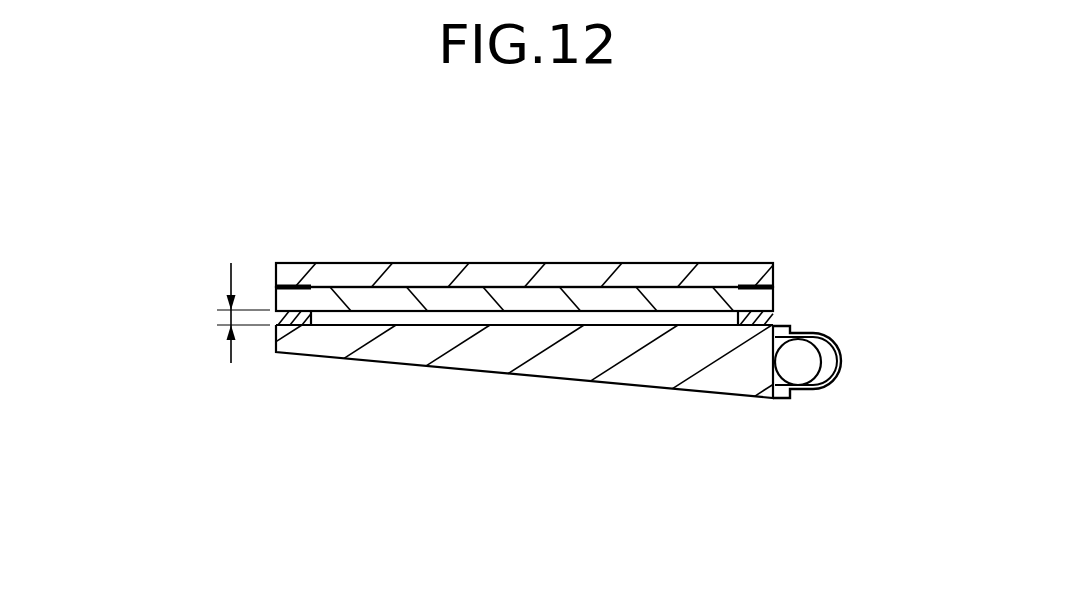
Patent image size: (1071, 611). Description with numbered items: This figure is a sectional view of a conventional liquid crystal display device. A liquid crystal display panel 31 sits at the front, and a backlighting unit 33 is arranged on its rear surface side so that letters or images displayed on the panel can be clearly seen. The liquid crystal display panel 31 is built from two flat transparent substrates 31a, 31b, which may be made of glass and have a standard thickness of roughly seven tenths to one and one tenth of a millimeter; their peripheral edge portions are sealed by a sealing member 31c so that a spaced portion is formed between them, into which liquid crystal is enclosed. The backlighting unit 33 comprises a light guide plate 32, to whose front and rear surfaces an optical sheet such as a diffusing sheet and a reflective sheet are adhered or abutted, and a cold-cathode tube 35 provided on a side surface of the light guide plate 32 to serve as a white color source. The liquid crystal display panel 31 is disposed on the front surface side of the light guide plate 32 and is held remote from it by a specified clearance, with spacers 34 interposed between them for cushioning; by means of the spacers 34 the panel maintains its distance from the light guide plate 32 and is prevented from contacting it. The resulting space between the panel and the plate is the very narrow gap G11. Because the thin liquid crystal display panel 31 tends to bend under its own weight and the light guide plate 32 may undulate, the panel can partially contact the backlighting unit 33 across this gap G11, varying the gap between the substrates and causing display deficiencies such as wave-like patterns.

The liquid crystal display panel 31 is at (588, 200).
The transparent substrate 31a is at (655, 276).
The transparent substrate 31b is at (703, 302).
The sealing member 31c is at (742, 290).
The light guide plate 32 is at (697, 353).
The backlighting unit 33 is at (558, 450).
The spacer 34 is at (773, 319).
The cold-cathode tube 35 is at (800, 360).
The gap G11 is at (227, 318).